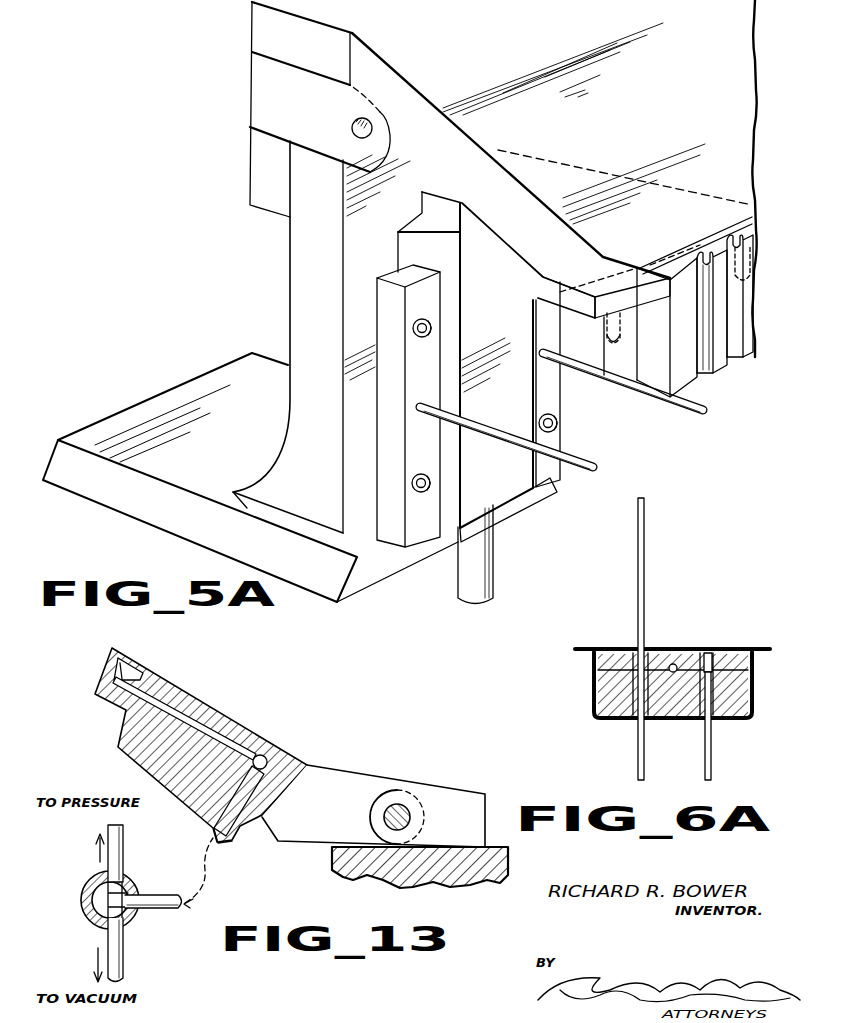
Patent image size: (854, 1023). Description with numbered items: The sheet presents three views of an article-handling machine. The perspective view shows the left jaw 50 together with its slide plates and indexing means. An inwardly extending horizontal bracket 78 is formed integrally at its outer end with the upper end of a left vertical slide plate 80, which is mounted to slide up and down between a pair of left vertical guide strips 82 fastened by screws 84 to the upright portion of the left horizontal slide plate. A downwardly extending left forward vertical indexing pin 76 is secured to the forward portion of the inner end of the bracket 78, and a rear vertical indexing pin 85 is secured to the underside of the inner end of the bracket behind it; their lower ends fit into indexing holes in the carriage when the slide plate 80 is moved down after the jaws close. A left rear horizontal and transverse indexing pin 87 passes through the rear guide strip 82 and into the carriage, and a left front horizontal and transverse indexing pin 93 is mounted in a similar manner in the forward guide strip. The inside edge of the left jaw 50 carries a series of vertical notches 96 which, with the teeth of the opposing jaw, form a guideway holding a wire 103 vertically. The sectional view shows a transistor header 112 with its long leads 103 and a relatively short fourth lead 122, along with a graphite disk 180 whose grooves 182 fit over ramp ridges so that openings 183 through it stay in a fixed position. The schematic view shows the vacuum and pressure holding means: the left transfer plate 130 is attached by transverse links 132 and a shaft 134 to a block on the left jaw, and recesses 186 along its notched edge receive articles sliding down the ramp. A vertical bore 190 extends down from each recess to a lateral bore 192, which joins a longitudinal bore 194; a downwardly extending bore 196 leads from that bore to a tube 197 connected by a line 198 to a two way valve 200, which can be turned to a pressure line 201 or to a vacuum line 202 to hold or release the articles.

In FIG. 5A, the left jaw 50 is at (687, 380).
In FIG. 5A, the left forward vertical indexing pin 76 is at (760, 264).
In FIG. 5A, the horizontal bracket 78 is at (505, 257).
In FIG. 5A, the left vertical slide plate 80 is at (507, 490).
In FIG. 5A, the left vertical guide strips 82 is at (388, 382).
In FIG. 5A, the screws 84 is at (428, 340).
In FIG. 5A, the rear vertical indexing pin 85 is at (607, 334).
In FIG. 5A, the left rear horizontal transverse indexing pin 87 is at (575, 475).
In FIG. 5A, the left front horizontal transverse indexing pin 93 is at (677, 412).
In FIG. 5A, the vertical notches 96 is at (703, 257).
In FIG. 6A, the wire 103 is at (645, 583).
In FIG. 6A, the transistor header 112 is at (588, 647).
In FIG. 6A, the fourth lead 122 is at (643, 757).
In FIG. 6A, the graphite disk 180 is at (600, 660).
In FIG. 6A, the grooves 182 is at (672, 664).
In FIG. 6A, the openings 183 is at (717, 652).
In FIG. 13, the left transfer plate 130 is at (130, 728).
In FIG. 13, the transverse links 132 is at (342, 779).
In FIG. 13, the shaft 134 is at (395, 806).
In FIG. 13, the recesses 186 is at (143, 672).
In FIG. 13, the vertical bore 190 is at (130, 661).
In FIG. 13, the lateral bore 192 is at (190, 714).
In FIG. 13, the longitudinal bore 194 is at (268, 758).
In FIG. 13, the downwardly extending bore 196 is at (253, 785).
In FIG. 13, the tube 197 is at (227, 843).
In FIG. 13, the line 198 is at (167, 912).
In FIG. 13, the two way valve 200 is at (92, 886).
In FIG. 13, the pressure line 201 is at (124, 846).
In FIG. 13, the vacuum line 202 is at (124, 963).